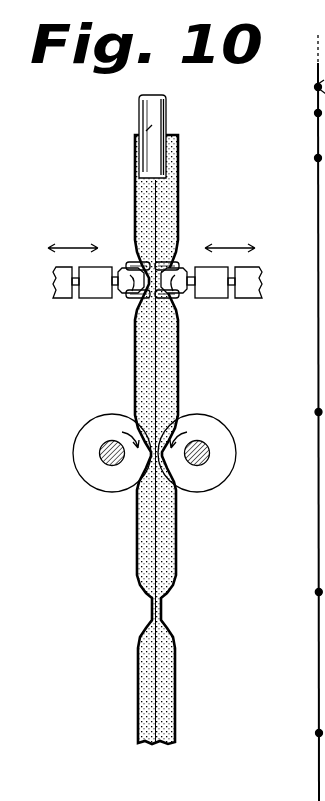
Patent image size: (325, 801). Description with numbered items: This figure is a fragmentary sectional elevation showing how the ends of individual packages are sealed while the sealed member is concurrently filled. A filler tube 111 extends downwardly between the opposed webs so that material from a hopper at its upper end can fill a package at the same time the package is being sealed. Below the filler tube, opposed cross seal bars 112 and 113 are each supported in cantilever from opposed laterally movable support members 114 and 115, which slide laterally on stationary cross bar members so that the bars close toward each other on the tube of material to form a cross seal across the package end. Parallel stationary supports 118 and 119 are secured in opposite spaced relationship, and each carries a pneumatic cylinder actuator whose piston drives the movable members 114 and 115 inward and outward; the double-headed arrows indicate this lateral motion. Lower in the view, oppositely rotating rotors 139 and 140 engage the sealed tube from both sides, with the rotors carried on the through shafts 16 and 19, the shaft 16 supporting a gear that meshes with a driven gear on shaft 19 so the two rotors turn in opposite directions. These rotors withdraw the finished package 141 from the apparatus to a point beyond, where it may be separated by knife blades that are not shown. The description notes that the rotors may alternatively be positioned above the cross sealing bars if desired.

The filler tube 111 is at (168, 114).
The cross seal bar 112 is at (128, 289).
The cross seal bar 113 is at (184, 290).
The laterally movable support member 114 is at (93, 290).
The laterally movable support member 115 is at (221, 290).
The stationary support 118 is at (63, 290).
The stationary support 119 is at (254, 278).
The through shaft 16 is at (103, 461).
The through shaft 19 is at (206, 459).
The rotor 139 is at (117, 489).
The rotor 140 is at (202, 489).
The finished package 141 is at (177, 553).